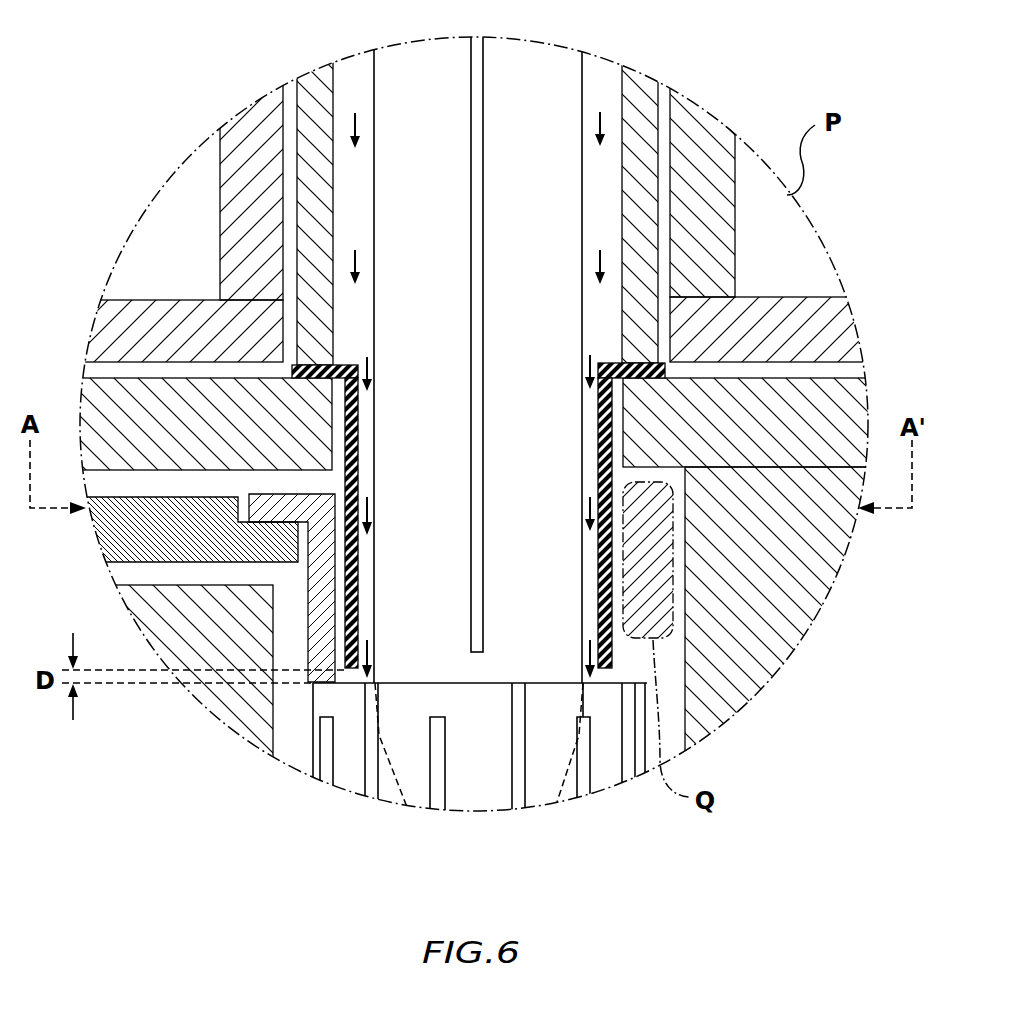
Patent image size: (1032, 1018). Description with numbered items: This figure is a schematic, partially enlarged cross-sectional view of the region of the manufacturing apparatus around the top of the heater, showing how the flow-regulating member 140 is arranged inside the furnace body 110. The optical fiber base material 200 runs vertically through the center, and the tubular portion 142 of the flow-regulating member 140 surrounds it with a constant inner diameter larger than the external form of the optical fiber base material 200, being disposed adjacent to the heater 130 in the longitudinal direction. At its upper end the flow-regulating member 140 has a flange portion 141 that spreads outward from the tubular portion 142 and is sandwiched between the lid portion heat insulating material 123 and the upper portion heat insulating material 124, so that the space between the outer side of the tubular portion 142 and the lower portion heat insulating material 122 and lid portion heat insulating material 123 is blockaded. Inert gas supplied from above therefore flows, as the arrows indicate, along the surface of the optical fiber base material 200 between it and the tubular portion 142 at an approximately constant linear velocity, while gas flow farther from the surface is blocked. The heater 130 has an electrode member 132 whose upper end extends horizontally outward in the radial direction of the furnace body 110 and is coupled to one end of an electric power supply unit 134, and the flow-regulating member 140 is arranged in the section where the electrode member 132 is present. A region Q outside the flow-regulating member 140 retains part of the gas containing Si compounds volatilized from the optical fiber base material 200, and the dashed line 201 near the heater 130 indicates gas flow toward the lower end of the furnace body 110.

The furnace body 110 is at (166, 344).
The lower portion heat insulating material 122 is at (166, 628).
The lid portion heat insulating material 123 is at (166, 432).
The upper portion heat insulating material 124 is at (299, 229).
The heater 130 is at (313, 762).
The electrode member 132 is at (256, 522).
The electric power supply unit 134 is at (166, 552).
The flow-regulating member 140 is at (448, 285).
The flange portion 141 is at (342, 365).
The tubular portion 142 is at (358, 453).
The optical fiber base material 200 is at (403, 87).
The flow boundary line 201 is at (575, 793).